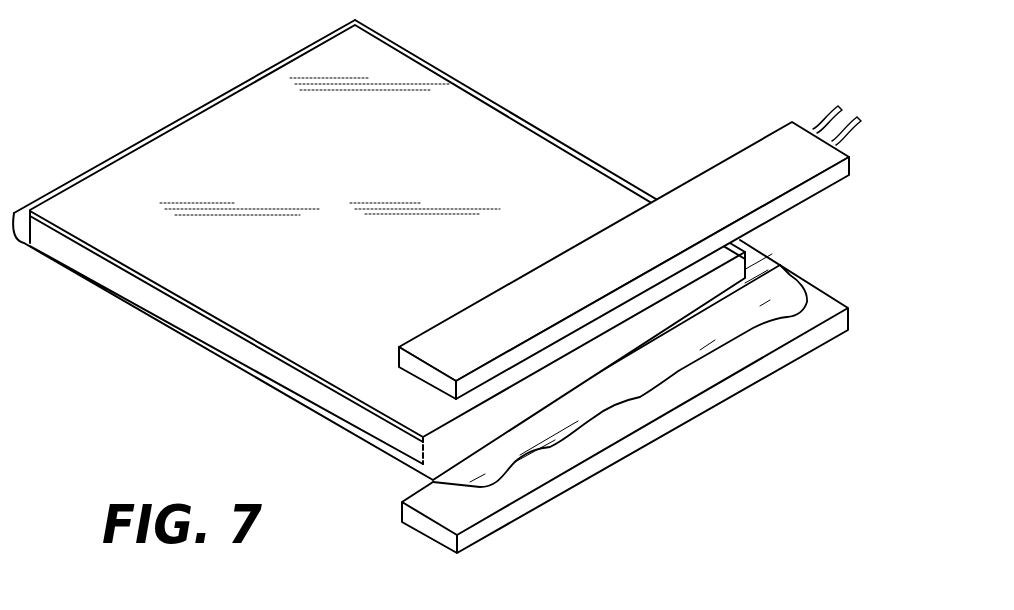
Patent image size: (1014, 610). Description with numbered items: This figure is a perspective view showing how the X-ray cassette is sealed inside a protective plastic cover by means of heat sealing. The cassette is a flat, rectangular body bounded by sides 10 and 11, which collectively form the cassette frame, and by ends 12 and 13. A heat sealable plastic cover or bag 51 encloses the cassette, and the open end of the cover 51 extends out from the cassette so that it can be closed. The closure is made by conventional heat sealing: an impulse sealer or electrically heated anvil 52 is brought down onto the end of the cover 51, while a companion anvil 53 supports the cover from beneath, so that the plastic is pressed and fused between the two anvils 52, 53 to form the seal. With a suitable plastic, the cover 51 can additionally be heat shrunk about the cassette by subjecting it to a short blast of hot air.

The side 10 is at (270, 364).
The side 11 is at (590, 150).
The end 12 is at (172, 127).
The end 13 is at (422, 458).
The heat sealable plastic cover 51 is at (613, 388).
The electrically heated anvil 52 is at (748, 163).
The companion anvil 53 is at (528, 505).